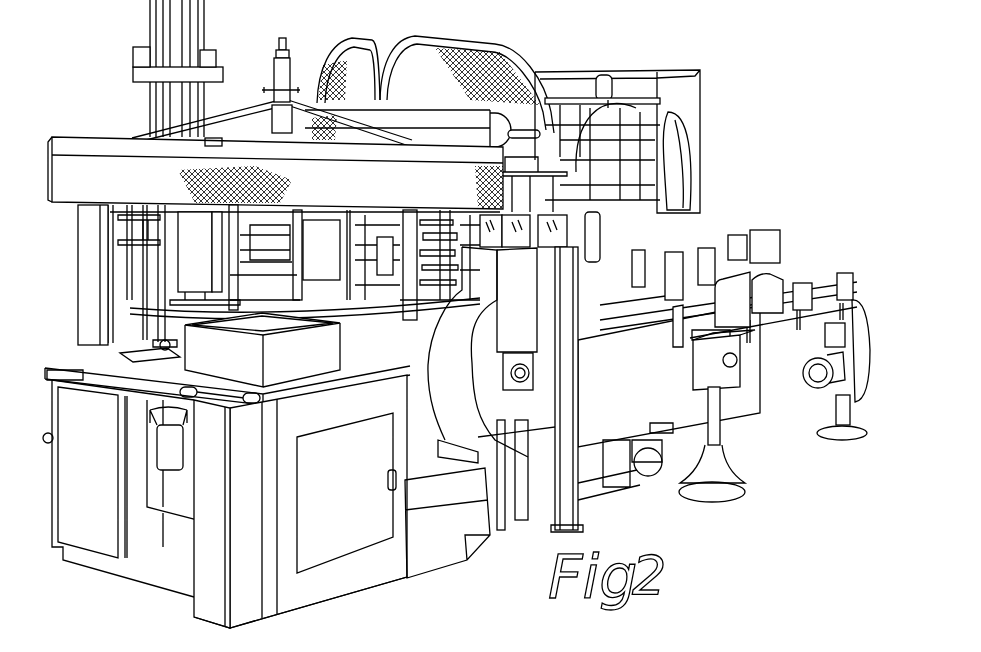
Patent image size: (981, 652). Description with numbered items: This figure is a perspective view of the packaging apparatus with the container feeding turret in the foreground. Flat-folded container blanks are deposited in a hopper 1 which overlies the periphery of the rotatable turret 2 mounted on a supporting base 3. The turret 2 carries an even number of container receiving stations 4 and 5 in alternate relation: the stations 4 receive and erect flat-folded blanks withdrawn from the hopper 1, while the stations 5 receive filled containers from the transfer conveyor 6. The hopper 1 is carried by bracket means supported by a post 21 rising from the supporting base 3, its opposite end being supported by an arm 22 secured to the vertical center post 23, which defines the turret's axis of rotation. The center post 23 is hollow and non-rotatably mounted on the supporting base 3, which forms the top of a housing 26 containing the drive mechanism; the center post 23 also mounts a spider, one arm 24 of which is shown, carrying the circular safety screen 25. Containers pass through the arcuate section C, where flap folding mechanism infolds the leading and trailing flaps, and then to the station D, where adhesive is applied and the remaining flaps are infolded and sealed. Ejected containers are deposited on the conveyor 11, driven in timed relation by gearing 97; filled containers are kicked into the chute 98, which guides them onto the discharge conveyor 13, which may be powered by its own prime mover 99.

The hopper 1 is at (206, 62).
The rotatable turret 2 is at (371, 319).
The supporting base 3 is at (337, 386).
The container receiving stations 4 is at (182, 272).
The container receiving stations 5 is at (330, 281).
The transfer conveyor 6 is at (135, 256).
The conveyor 11 is at (588, 310).
The discharge conveyor 13 is at (762, 362).
The post 21 is at (86, 240).
The arm 22 is at (213, 144).
The vertical center post 23 is at (289, 68).
The spider arm 24 is at (244, 110).
The circular safety screen 25 is at (400, 193).
The housing 26 is at (363, 578).
The gearing 97 is at (524, 383).
The chute 98 is at (727, 308).
The prime mover 99 is at (813, 385).
The arcuate section C is at (712, 162).
The station D is at (604, 239).